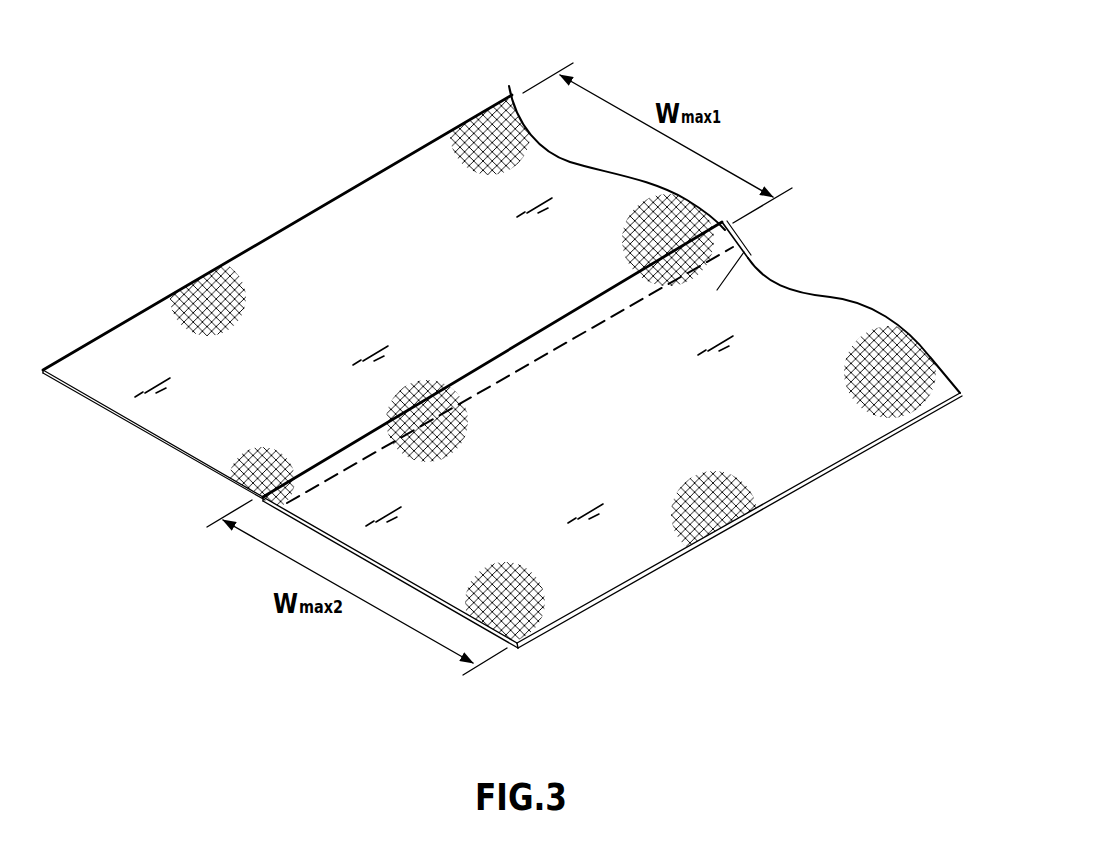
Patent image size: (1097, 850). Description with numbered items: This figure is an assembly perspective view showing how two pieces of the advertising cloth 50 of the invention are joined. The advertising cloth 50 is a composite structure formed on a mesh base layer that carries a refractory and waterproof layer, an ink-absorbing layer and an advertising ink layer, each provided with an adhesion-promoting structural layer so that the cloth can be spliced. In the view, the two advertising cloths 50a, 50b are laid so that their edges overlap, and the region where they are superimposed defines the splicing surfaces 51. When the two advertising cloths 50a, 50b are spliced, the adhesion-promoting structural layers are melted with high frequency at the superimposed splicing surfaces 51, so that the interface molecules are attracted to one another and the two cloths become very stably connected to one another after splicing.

The advertising cloth 50 is at (150, 38).
The advertising cloth 50a is at (297, 250).
The advertising cloth 50b is at (603, 568).
The splicing surface 51 is at (545, 345).